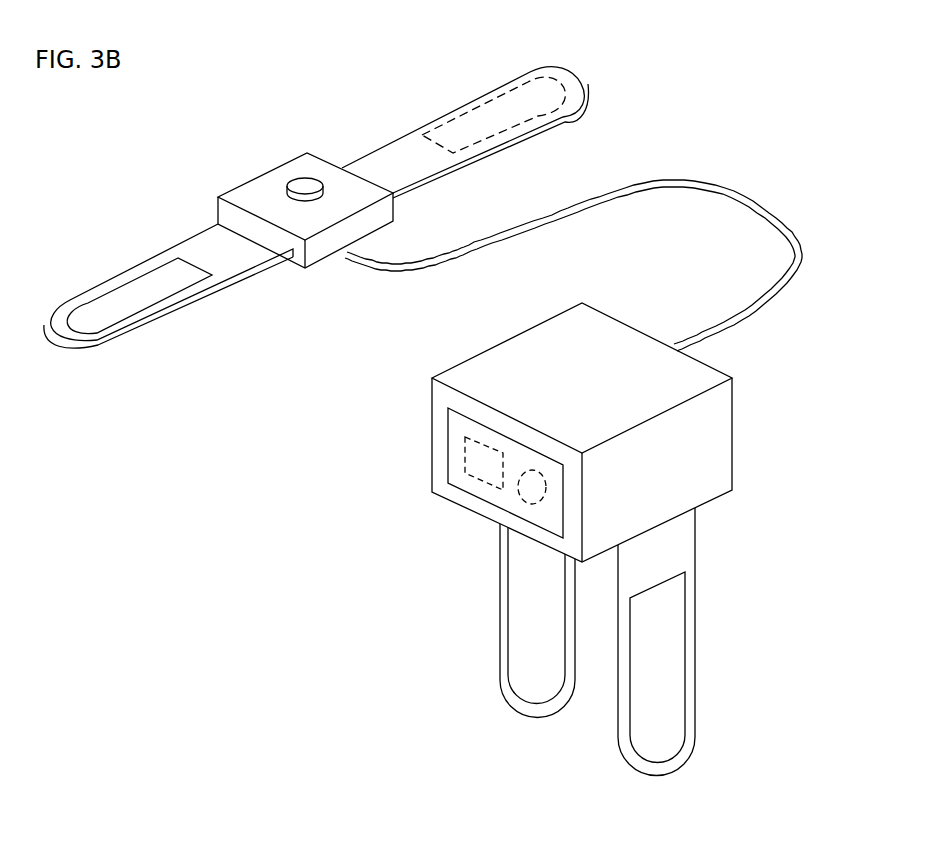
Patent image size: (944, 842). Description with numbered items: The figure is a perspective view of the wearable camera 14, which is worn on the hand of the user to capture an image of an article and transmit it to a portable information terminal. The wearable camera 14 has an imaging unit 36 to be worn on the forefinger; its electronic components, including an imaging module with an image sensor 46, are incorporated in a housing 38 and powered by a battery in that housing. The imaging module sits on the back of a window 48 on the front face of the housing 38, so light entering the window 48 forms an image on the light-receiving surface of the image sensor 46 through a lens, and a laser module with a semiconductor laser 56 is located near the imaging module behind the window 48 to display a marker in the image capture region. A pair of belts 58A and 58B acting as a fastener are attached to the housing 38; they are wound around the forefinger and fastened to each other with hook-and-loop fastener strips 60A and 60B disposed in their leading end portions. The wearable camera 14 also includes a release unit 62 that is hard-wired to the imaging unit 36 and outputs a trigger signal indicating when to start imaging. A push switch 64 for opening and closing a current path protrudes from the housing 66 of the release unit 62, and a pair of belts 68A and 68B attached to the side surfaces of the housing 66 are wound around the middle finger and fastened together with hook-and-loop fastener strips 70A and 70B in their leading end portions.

The wearable camera 14 is at (257, 522).
The imaging unit 36 is at (783, 487).
The housing 38 is at (735, 405).
The image sensor 46 is at (467, 453).
The window 48 is at (462, 425).
The semiconductor laser 56 is at (533, 484).
The belt 58A is at (695, 617).
The belt 58B is at (497, 672).
The hook-and-loop fastener strip 60A is at (672, 692).
The hook-and-loop fastener strip 60B is at (518, 610).
The release unit 62 is at (265, 83).
The push switch 64 is at (305, 184).
The housing 66 is at (263, 173).
The belt 68A is at (535, 70).
The belt 68B is at (158, 255).
The hook-and-loop fastener strip 70A is at (508, 112).
The hook-and-loop fastener strip 70B is at (123, 310).